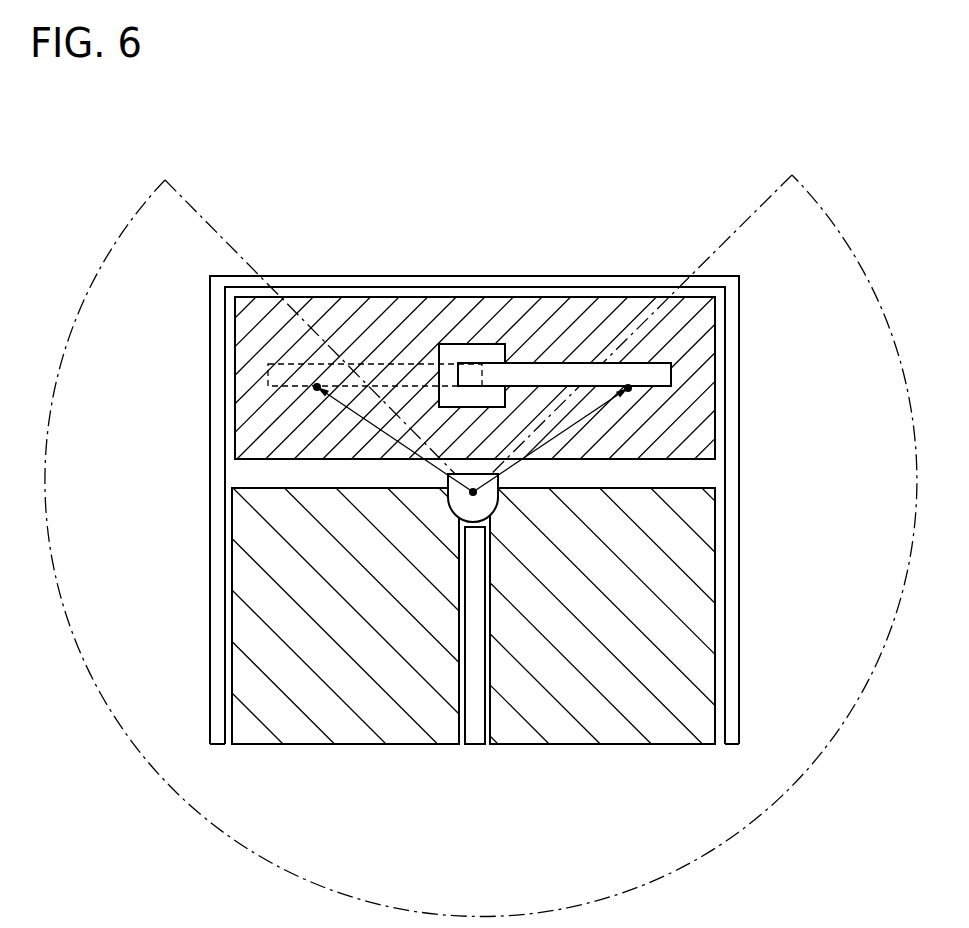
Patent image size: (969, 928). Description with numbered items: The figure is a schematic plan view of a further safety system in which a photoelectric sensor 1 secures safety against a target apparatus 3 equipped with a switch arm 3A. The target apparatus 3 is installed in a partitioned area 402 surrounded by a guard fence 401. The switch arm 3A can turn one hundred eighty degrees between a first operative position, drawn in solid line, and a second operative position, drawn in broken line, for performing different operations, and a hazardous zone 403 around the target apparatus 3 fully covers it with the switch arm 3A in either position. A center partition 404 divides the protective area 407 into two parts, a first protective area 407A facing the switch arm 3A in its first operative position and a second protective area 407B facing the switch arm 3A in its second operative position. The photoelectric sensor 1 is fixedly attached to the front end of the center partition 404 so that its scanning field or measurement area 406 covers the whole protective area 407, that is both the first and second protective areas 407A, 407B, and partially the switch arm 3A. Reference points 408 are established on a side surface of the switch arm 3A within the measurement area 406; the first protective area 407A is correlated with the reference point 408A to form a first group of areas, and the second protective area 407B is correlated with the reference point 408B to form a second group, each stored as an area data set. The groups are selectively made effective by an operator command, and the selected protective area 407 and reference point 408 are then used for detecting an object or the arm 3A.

The photoelectric sensor 1 is at (449, 505).
The target apparatus 3 is at (467, 344).
The switch arm 3A is at (580, 362).
The guard fence 401 is at (507, 276).
The partitioned area 402 is at (283, 746).
The hazardous zone 403 is at (707, 349).
The center partition 404 is at (475, 737).
The measurement area 406 is at (755, 823).
The protective area 407 is at (473, 669).
The first protective area 407A is at (658, 737).
The second protective area 407B is at (362, 737).
The reference point 408 is at (474, 428).
The first reference point 408A is at (628, 388).
The second reference point 408B is at (317, 387).